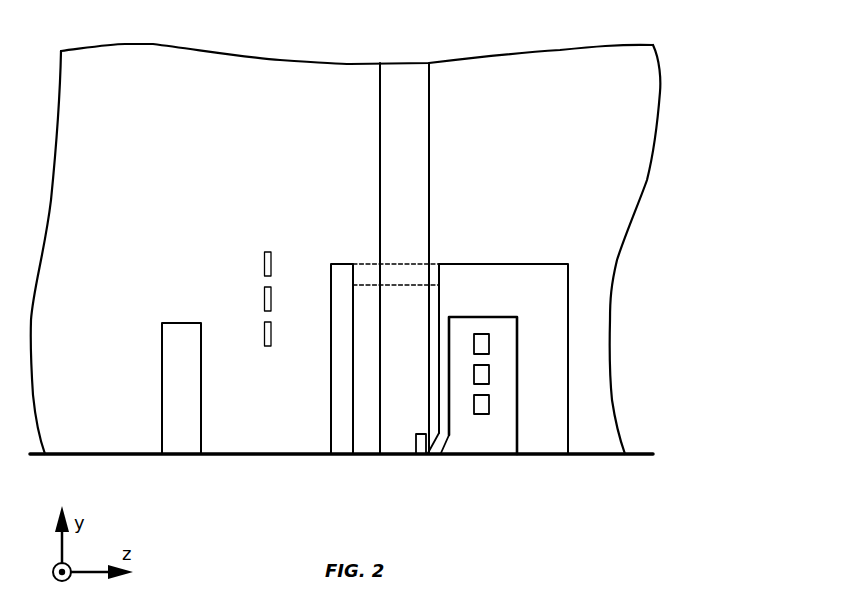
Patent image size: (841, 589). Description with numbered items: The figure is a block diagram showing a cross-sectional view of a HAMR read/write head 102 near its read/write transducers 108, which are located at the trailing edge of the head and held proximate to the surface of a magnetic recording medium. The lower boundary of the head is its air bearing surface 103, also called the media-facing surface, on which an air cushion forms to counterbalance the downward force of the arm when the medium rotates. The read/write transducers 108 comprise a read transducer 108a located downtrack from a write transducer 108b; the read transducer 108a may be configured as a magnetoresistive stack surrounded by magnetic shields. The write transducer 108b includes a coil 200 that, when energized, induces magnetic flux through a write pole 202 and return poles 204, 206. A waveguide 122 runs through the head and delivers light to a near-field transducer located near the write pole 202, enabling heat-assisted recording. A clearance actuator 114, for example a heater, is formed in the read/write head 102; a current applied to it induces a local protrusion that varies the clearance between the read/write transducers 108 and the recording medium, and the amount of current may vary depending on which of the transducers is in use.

The read/write head 102 is at (660, 92).
The air bearing surface 103 is at (617, 456).
The read/write transducers 108 is at (290, 512).
The read transducer 108a is at (163, 372).
The write transducer 108b is at (521, 213).
The clearance actuator 114 is at (264, 252).
The waveguide 122 is at (404, 70).
The coil 200 is at (485, 380).
The write pole 202 is at (420, 433).
The return pole 204 is at (557, 432).
The return pole 206 is at (334, 410).